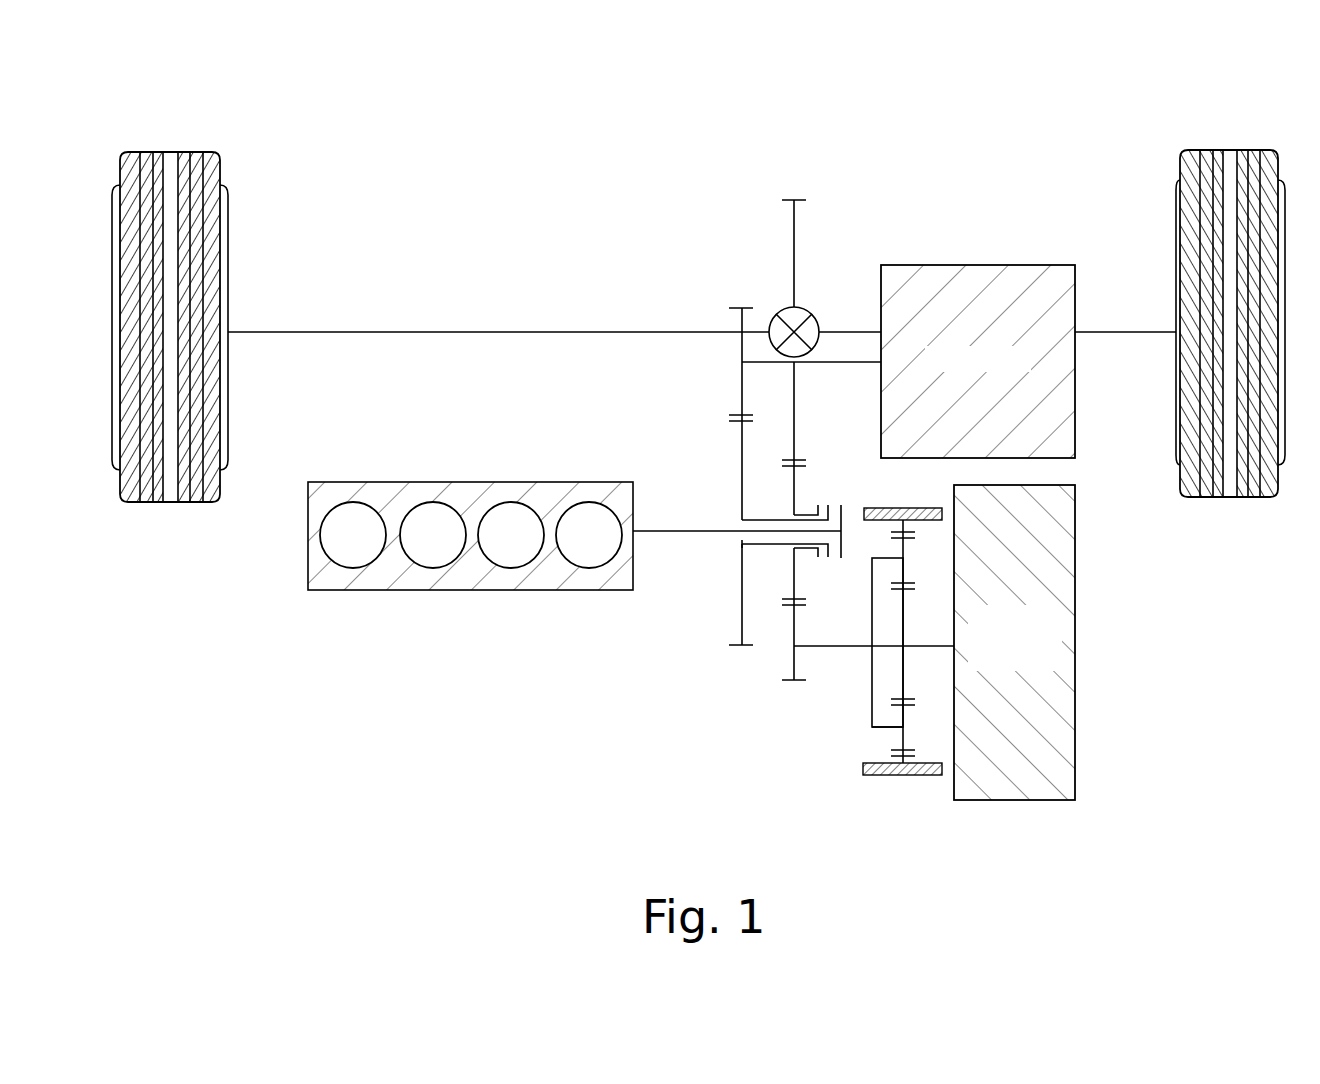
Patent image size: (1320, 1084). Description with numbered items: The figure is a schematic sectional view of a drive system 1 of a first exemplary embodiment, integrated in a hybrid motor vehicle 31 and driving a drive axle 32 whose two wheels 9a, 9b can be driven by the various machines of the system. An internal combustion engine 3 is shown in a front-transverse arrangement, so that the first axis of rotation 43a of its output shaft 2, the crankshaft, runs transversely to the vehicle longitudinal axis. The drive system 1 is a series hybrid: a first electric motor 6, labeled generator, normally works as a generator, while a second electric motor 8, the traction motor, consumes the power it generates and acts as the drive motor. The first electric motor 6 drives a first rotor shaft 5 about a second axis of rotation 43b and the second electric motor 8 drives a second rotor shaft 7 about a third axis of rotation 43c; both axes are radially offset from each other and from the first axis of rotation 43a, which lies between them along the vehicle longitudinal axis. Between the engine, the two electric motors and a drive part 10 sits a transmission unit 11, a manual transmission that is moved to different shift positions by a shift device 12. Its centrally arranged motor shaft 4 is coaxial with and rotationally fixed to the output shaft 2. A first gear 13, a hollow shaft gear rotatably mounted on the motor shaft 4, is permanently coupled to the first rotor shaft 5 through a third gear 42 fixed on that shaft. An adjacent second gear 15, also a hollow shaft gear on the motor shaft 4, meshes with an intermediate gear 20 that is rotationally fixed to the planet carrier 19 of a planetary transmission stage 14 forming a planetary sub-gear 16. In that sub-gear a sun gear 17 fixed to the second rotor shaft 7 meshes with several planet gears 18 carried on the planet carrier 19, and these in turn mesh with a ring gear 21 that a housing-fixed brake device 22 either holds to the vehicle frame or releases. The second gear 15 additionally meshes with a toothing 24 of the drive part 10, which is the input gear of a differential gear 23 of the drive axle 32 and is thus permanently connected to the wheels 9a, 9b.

The drive system 1 is at (443, 238).
The output shaft 2 is at (660, 530).
The internal combustion engine 3 is at (385, 585).
The motor shaft 4 is at (686, 585).
The first rotor shaft 5 is at (831, 278).
The first electric motor 6 is at (1000, 265).
The second rotor shaft 7 is at (943, 747).
The second electric motor 8 is at (1067, 717).
The wheel 9a is at (160, 150).
The wheel 9b is at (1225, 150).
The drive part 10 is at (797, 398).
The transmission unit 11 is at (748, 255).
The shift device 12 is at (848, 497).
The first gear 13 is at (737, 642).
The planetary transmission stage 14 is at (803, 756).
The second gear 15 is at (797, 470).
The planetary sub-gear 16 is at (852, 727).
The sun gear 17 is at (904, 632).
The planet gears 18 is at (900, 535).
The planet carrier 19 is at (870, 613).
The intermediate gear 20 is at (795, 633).
The ring gear 21 is at (912, 772).
The brake device 22 is at (872, 778).
The differential gear 23 is at (813, 300).
The toothing 24 is at (790, 198).
The motor vehicle 31 is at (352, 150).
The drive axle 32 is at (285, 422).
The third gear 42 is at (738, 380).
The first axis of rotation 43a is at (705, 540).
The second axis of rotation 43b is at (827, 360).
The third axis of rotation 43c is at (938, 650).